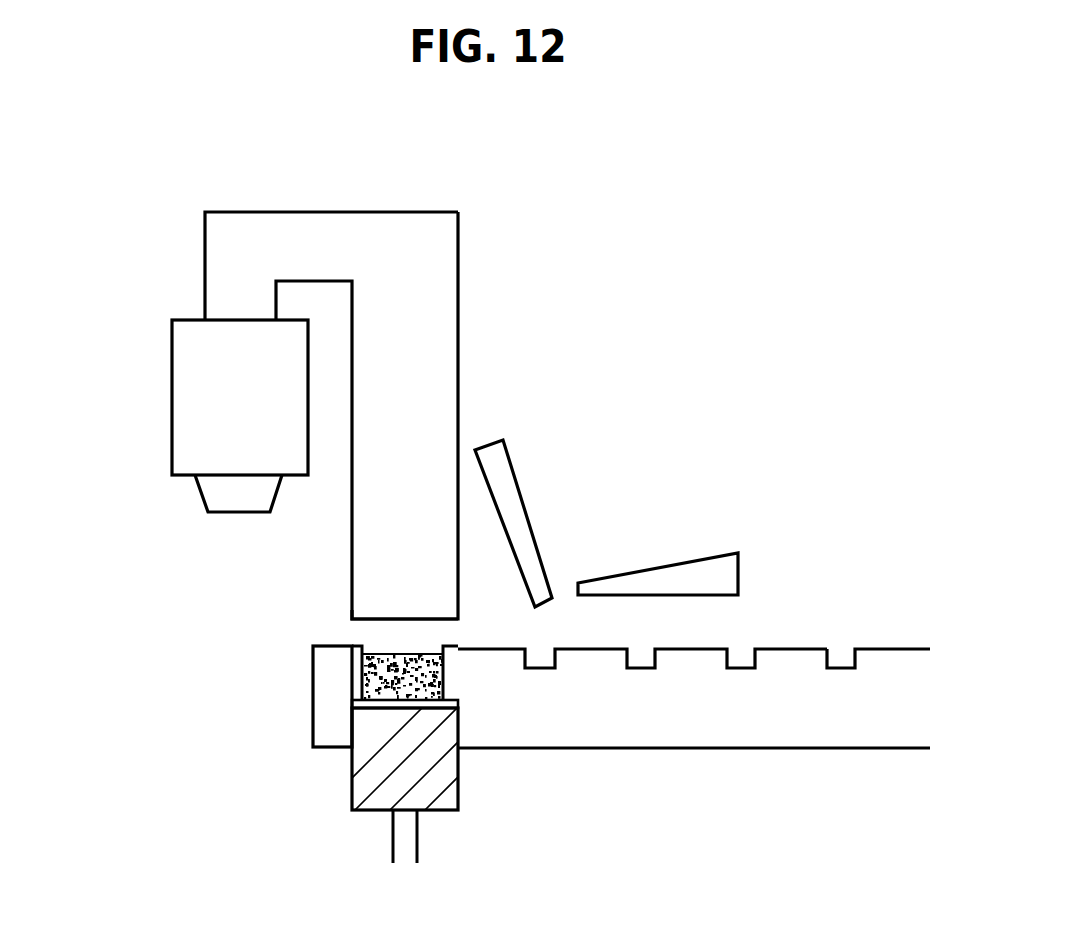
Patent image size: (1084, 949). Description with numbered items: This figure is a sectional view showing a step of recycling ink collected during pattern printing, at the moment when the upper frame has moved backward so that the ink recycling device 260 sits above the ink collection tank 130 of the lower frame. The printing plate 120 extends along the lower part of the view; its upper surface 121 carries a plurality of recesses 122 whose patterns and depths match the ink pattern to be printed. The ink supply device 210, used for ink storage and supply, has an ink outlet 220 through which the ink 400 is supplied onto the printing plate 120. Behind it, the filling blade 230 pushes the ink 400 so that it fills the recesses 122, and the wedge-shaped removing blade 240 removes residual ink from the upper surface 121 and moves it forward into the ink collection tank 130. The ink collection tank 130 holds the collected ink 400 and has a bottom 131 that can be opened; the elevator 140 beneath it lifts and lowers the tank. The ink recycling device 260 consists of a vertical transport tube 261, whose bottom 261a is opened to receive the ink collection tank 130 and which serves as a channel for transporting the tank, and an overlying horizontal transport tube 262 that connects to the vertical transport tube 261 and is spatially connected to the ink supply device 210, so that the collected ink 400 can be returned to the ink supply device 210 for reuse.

The printing plate 120 is at (773, 710).
The upper surface 121 is at (788, 648).
The recesses 122 is at (840, 660).
The ink collection tank 130 is at (357, 662).
The bottom 131 is at (350, 702).
The elevator 140 is at (448, 777).
The ink supply device 210 is at (208, 380).
The ink outlet 220 is at (227, 495).
The filling blade 230 is at (508, 480).
The removing blade 240 is at (708, 567).
The ink recycling device 260 is at (470, 228).
The vertical transport tube 261 is at (435, 300).
The bottom of the vertical transport tube 261a is at (367, 625).
The horizontal transport tube 262 is at (307, 255).
The ink 400 is at (402, 703).